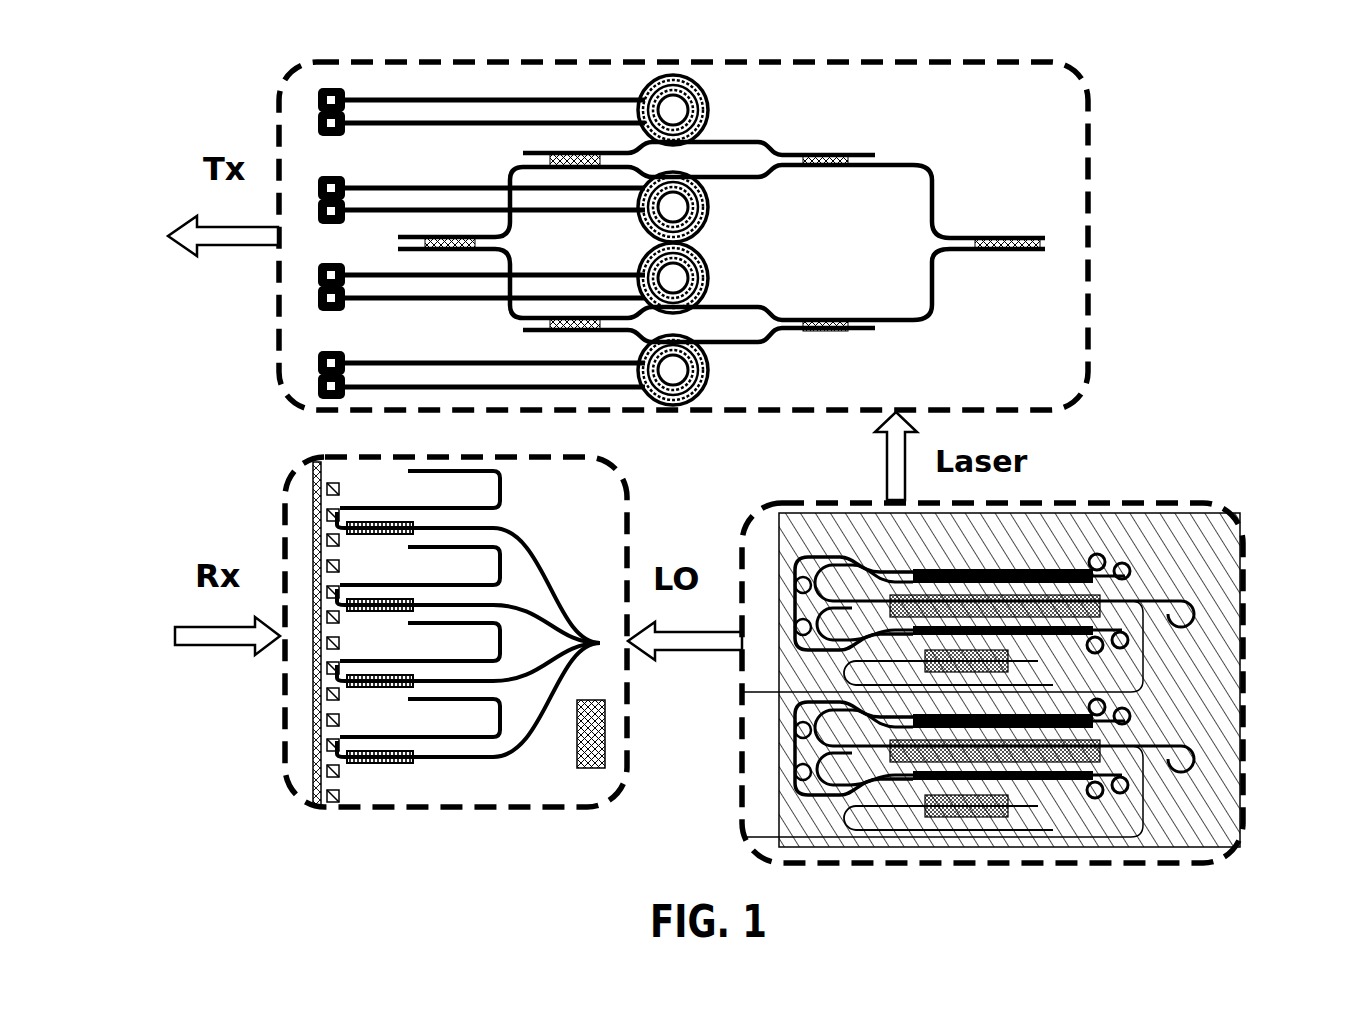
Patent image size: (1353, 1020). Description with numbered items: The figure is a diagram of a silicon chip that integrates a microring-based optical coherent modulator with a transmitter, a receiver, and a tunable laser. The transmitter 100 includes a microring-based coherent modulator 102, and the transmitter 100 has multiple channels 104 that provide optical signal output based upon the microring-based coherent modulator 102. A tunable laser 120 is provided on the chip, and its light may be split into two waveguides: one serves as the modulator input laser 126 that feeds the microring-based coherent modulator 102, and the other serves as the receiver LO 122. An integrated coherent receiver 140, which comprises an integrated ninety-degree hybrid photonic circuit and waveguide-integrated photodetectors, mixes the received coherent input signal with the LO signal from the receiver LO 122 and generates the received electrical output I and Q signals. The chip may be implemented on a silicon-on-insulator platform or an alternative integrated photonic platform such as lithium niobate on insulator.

The transmitter 100 is at (735, 236).
The microring-based coherent modulator 102 is at (938, 198).
The channels 104 is at (317, 133).
The tunable laser 120 is at (1230, 504).
The receiver LO 122 is at (683, 652).
The modulator input laser 126 is at (887, 470).
The integrated coherent receiver 140 is at (255, 478).